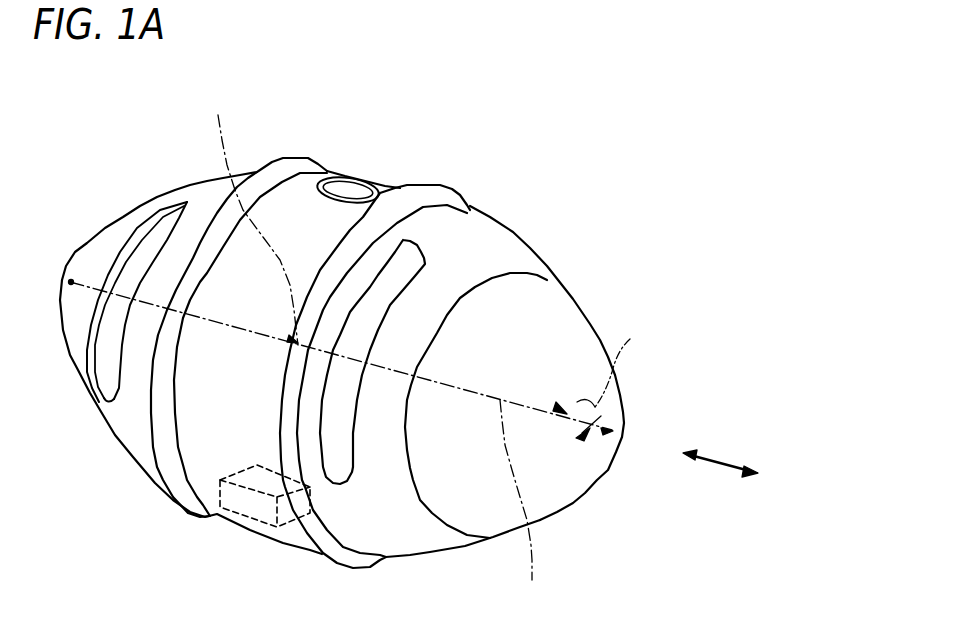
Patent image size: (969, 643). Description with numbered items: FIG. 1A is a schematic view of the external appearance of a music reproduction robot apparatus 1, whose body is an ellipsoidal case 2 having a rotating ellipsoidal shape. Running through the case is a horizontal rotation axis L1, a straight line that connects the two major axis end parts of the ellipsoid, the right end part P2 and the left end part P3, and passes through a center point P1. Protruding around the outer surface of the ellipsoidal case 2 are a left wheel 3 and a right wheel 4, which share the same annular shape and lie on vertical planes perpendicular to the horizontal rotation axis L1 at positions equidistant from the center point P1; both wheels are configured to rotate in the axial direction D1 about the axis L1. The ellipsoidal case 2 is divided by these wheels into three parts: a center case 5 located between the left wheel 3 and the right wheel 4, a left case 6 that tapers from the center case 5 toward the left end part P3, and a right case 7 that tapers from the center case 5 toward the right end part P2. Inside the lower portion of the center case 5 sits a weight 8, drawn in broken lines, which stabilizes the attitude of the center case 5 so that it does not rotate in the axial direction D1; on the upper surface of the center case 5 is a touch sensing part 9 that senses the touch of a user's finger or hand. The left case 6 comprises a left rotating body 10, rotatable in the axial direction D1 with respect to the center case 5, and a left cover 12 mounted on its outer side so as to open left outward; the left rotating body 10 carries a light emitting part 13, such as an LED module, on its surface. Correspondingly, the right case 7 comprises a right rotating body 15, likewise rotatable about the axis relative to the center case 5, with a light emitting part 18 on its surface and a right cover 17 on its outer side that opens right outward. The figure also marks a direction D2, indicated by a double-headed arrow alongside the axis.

The music reproduction robot apparatus 1 is at (543, 123).
The ellipsoidal case 2 is at (575, 181).
The left wheel 3 is at (288, 158).
The right wheel 4 is at (437, 190).
The center case 5 is at (392, 183).
The left case 6 is at (178, 181).
The right case 7 is at (556, 262).
The weight 8 is at (263, 513).
The touch sensing part 9 is at (353, 185).
The left rotating body 10 is at (133, 458).
The left cover 12 is at (79, 369).
The light emitting part 13 is at (97, 402).
The right rotating body 15 is at (430, 553).
The right cover 17 is at (597, 481).
The light emitting part 18 is at (427, 265).
The center point P1 is at (254, 217).
The right end part P2 is at (619, 428).
The left end part P3 is at (68, 277).
The axial direction D1 is at (617, 383).
The axial direction D2 is at (722, 463).
The horizontal rotation axis L1 is at (521, 505).